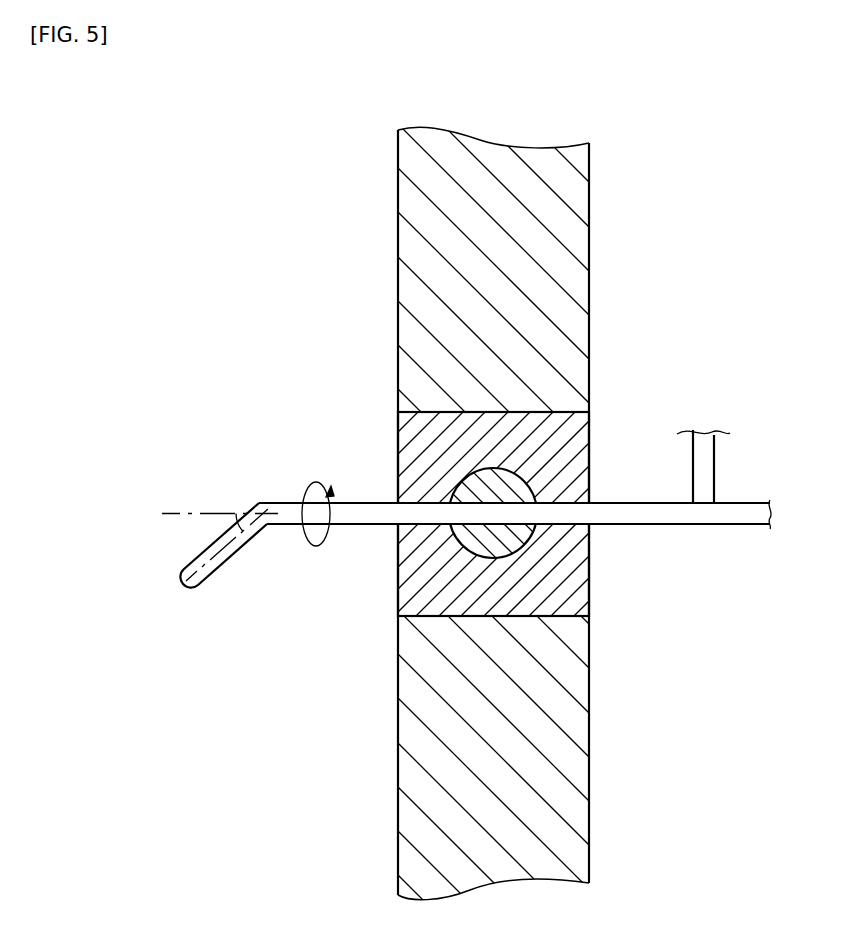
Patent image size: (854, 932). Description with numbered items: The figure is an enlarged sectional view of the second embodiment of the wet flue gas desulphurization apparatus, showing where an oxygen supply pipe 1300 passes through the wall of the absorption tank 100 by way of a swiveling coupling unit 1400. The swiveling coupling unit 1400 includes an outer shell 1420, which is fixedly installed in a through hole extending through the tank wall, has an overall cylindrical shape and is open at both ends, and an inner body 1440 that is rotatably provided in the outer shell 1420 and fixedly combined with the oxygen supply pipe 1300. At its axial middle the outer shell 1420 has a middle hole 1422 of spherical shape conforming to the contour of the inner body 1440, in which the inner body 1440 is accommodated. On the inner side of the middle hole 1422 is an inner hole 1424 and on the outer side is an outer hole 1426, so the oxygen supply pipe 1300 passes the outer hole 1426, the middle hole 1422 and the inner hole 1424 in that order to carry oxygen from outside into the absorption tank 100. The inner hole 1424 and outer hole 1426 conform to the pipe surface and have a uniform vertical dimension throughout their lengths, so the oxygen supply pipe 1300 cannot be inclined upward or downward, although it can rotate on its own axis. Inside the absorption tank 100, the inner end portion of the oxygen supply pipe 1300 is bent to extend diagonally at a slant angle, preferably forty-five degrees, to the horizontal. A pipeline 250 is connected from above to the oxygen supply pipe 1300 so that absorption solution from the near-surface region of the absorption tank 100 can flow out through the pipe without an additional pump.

The absorption tank 100 is at (557, 233).
The swiveling coupling unit 1400 is at (436, 441).
The inner body 1440 is at (508, 490).
The oxygen supply pipe 1300 is at (297, 512).
The pipeline 250 is at (707, 460).
The outer shell 1420 is at (573, 573).
The inner hole 1424 is at (424, 515).
The outer hole 1426 is at (568, 512).
The middle hole 1422 is at (492, 550).